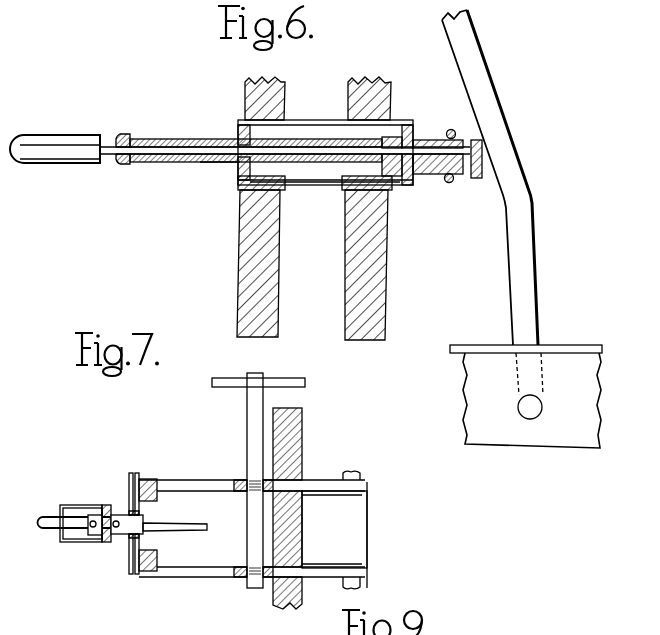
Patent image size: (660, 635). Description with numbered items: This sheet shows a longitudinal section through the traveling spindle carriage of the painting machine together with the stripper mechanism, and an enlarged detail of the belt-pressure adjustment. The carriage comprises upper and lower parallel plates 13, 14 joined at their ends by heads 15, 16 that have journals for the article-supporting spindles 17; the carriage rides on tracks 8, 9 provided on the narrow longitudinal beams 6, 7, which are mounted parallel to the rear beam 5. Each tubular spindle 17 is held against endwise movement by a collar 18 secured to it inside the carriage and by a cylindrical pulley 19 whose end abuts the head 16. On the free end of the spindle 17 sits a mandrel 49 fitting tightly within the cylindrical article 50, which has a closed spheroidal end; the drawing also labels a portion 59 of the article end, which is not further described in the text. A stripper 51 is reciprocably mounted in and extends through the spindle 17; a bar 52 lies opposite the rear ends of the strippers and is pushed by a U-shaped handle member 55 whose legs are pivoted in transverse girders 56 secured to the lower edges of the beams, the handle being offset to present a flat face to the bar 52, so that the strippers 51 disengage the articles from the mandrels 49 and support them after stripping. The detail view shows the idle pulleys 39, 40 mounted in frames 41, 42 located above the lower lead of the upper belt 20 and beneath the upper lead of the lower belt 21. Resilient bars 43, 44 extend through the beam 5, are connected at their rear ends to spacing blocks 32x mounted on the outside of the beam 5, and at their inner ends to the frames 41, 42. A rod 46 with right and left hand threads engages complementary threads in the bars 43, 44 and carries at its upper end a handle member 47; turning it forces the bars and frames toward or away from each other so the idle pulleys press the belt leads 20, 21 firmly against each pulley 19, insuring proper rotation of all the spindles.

In FIG. 7, the rear beam 5 is at (290, 600).
In FIG. 6, the longitudinal beam 6 is at (385, 272).
In FIG. 6, the longitudinal beam 7 is at (279, 271).
In FIG. 6, the track 8 is at (238, 186).
In FIG. 6, the track 9 is at (392, 190).
In FIG. 6, the upper plate 13 is at (323, 186).
In FIG. 6, the lower plate 14 is at (318, 120).
In FIG. 7, the lower plate 14 is at (61, 539).
In FIG. 6, the head 15 is at (240, 129).
In FIG. 6, the head 16 is at (411, 128).
In FIG. 7, the head 16 is at (111, 506).
In FIG. 6, the article-supporting spindle 17 is at (219, 161).
In FIG. 6, the collar 18 is at (393, 138).
In FIG. 7, the collar 18 is at (95, 506).
In FIG. 6, the pulley 19 is at (436, 140).
In FIG. 7, the pulley 19 is at (118, 535).
In FIG. 6, the endless belt 20 is at (453, 131).
In FIG. 7, the endless belt 20 is at (130, 511).
In FIG. 6, the endless belt 21 is at (449, 183).
In FIG. 7, the endless belt 21 is at (134, 536).
In FIG. 7, the spacing block 32x is at (358, 512).
In FIG. 7, the idle pulley 39 is at (133, 473).
In FIG. 7, the idle pulley 40 is at (133, 575).
In FIG. 7, the frame 41 is at (166, 479).
In FIG. 7, the frame 42 is at (150, 572).
In FIG. 7, the resilient bar 43 is at (211, 480).
In FIG. 7, the resilient bar 44 is at (170, 573).
In FIG. 7, the rod 46 is at (247, 437).
In FIG. 7, the handle member 47 is at (230, 378).
In FIG. 6, the mandrel 49 is at (150, 138).
In FIG. 6, the cylindrical article 50 is at (55, 134).
In FIG. 6, the stripper 51 is at (108, 146).
In FIG. 7, the stripper 51 is at (175, 522).
In FIG. 6, the bar 52 is at (478, 179).
In FIG. 6, the U-shaped handle member 55 is at (493, 92).
In FIG. 6, the transverse girder 56 is at (566, 354).
In FIG. 6, the sleeve 59 is at (43, 162).